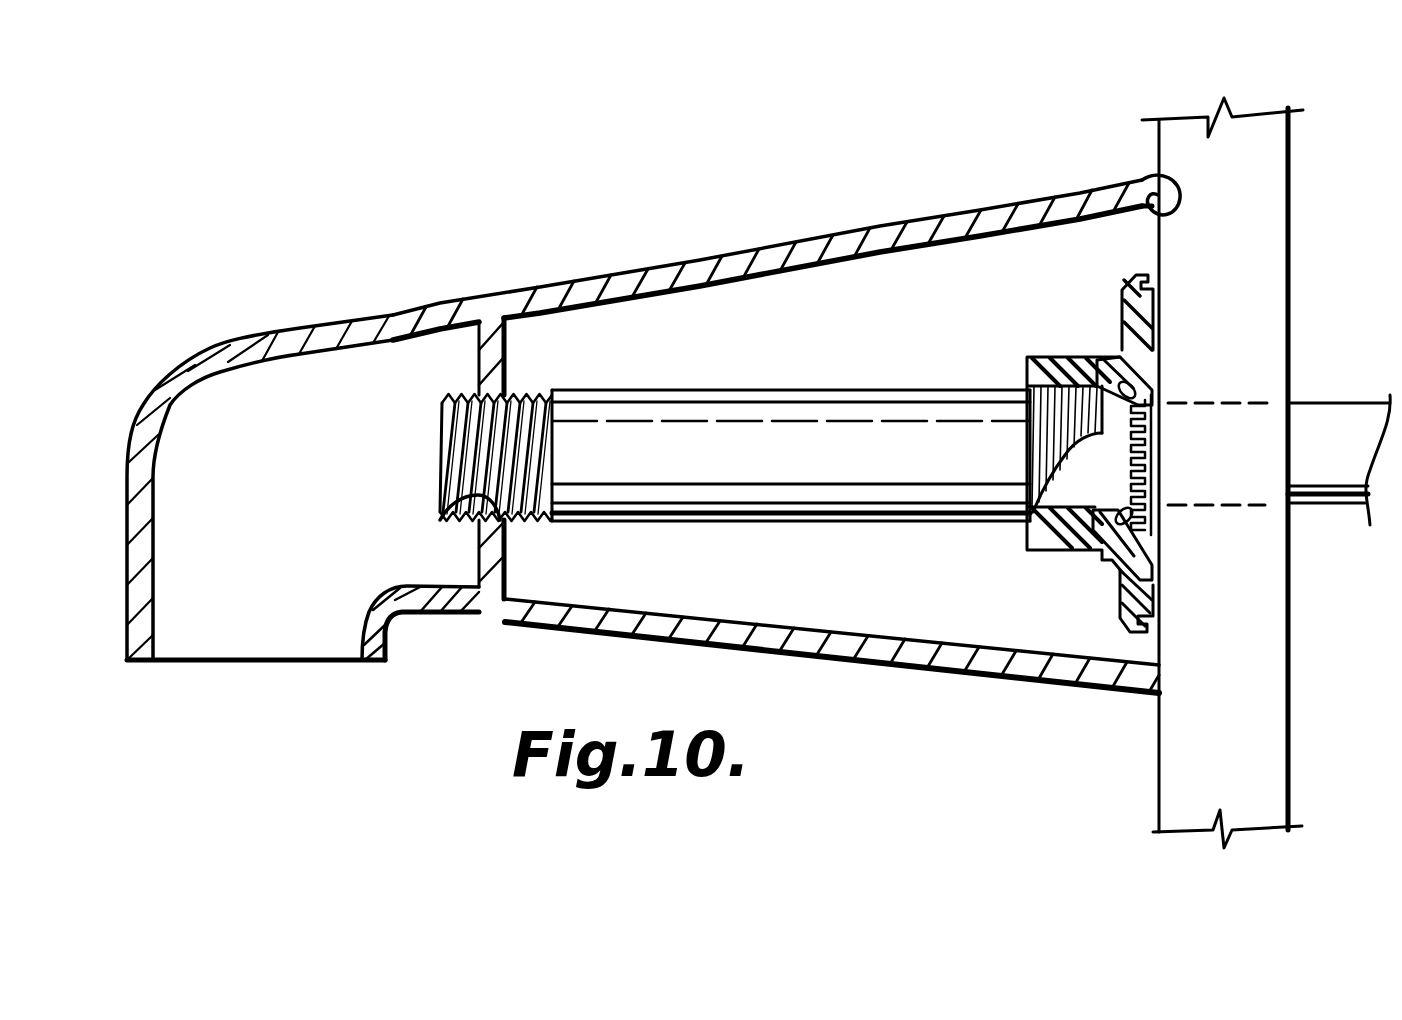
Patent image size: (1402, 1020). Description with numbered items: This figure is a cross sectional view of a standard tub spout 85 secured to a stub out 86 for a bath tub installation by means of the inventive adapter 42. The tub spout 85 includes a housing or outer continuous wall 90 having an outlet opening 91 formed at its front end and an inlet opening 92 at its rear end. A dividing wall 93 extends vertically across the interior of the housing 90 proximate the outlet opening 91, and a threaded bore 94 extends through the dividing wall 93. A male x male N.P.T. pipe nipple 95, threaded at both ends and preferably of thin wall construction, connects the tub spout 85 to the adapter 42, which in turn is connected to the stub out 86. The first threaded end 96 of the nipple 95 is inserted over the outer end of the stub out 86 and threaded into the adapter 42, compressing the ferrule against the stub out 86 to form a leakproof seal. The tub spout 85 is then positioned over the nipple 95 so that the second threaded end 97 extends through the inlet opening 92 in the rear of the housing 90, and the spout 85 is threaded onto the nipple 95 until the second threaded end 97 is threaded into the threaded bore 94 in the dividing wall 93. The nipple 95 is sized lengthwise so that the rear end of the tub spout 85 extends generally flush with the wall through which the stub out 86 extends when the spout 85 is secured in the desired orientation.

The tub spout 85 is at (395, 308).
The housing or outer continuous wall 90 is at (622, 270).
The outlet opening 91 is at (358, 648).
The inlet opening 92 is at (1162, 172).
The dividing wall 93 is at (478, 357).
The threaded bore 94 is at (428, 519).
The nipple 95 is at (750, 388).
The first threaded end 96 is at (1058, 360).
The second threaded end 97 is at (441, 452).
The adapter 42 is at (1108, 350).
The stub out 86 is at (1072, 493).